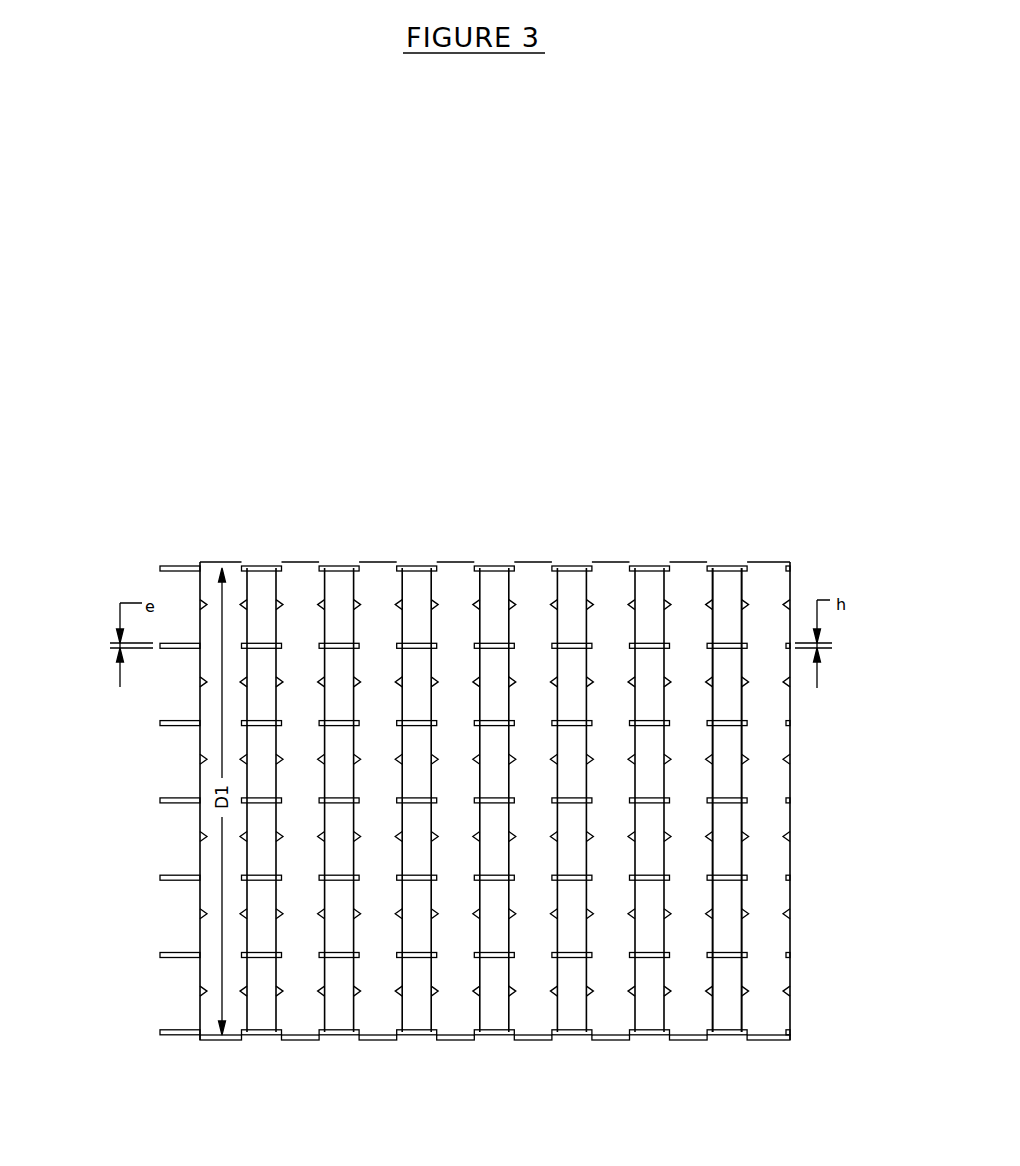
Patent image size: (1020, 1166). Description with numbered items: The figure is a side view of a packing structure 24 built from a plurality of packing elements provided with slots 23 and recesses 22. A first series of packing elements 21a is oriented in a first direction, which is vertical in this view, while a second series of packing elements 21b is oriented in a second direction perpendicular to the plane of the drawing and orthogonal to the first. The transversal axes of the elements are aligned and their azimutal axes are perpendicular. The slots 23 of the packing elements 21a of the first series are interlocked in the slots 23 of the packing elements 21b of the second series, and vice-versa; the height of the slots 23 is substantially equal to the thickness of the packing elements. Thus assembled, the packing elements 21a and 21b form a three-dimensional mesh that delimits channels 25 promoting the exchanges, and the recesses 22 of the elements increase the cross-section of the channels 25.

The packing elements of the first series 21a is at (300, 993).
The packing elements of the second series 21b is at (406, 551).
The recess 22 is at (187, 599).
The slot 23 is at (187, 716).
The packing structure 24 is at (616, 391).
The channel 25 is at (728, 851).